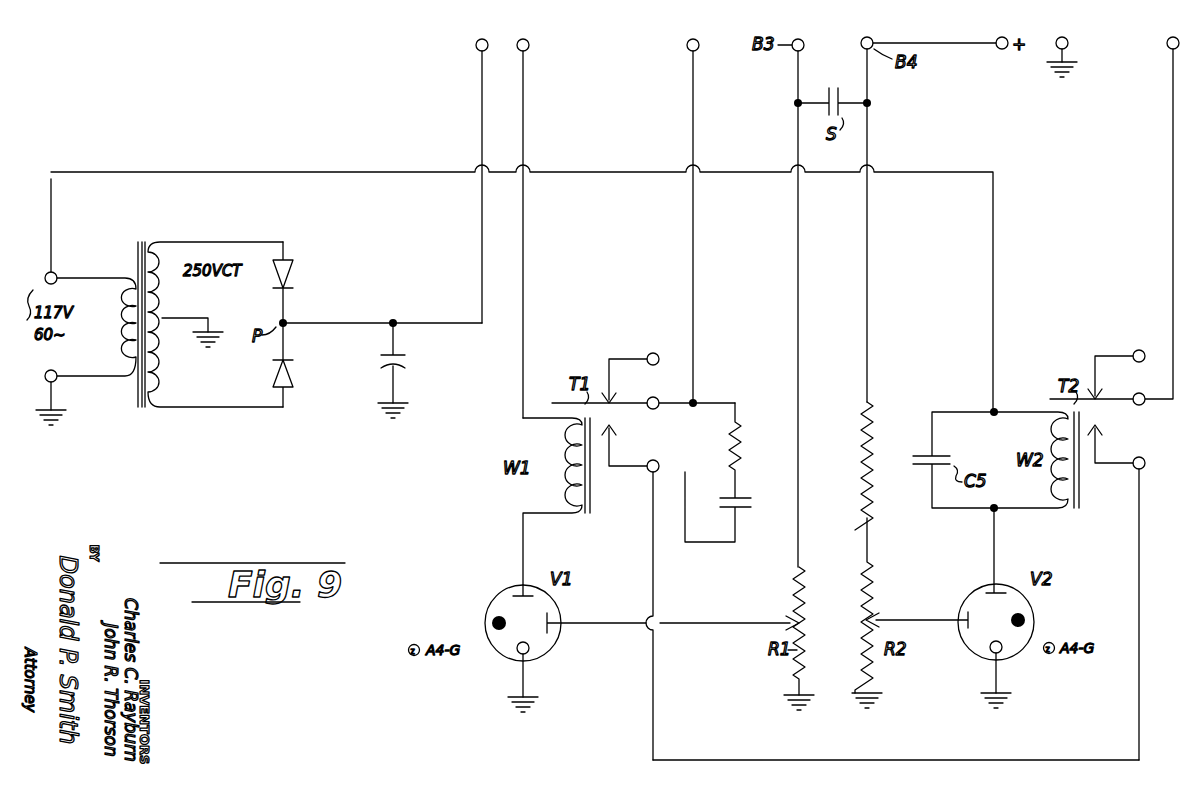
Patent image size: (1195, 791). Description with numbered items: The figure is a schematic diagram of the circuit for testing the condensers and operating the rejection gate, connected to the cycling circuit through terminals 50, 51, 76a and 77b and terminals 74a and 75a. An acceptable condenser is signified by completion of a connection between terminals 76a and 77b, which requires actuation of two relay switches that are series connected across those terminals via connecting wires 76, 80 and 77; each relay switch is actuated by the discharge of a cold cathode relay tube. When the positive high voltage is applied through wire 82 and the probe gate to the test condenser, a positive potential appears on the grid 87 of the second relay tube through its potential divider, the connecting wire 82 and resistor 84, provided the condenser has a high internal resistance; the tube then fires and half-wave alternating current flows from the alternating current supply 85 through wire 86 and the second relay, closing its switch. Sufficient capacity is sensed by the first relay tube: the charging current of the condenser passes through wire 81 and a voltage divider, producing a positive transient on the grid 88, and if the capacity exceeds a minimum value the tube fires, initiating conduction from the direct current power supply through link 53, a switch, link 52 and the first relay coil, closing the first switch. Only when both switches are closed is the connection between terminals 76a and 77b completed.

The terminal 50 is at (476, 42).
The terminal 51 is at (529, 42).
The link 52 is at (523, 261).
The link 53 is at (482, 265).
The terminal 74a is at (1001, 50).
The terminal 75a is at (1069, 46).
The connecting wire 76 is at (693, 263).
The terminal 76a is at (688, 42).
The connecting wire 77 is at (1173, 145).
The terminal 77b is at (1170, 50).
The connecting wire 80 is at (898, 760).
The wire 81 is at (798, 263).
The wire 82 is at (867, 263).
The resistor 84 is at (867, 434).
The alternating current supply 85 is at (37, 233).
The wire 86 is at (322, 172).
The grid 87 is at (936, 614).
The grid 88 is at (558, 620).